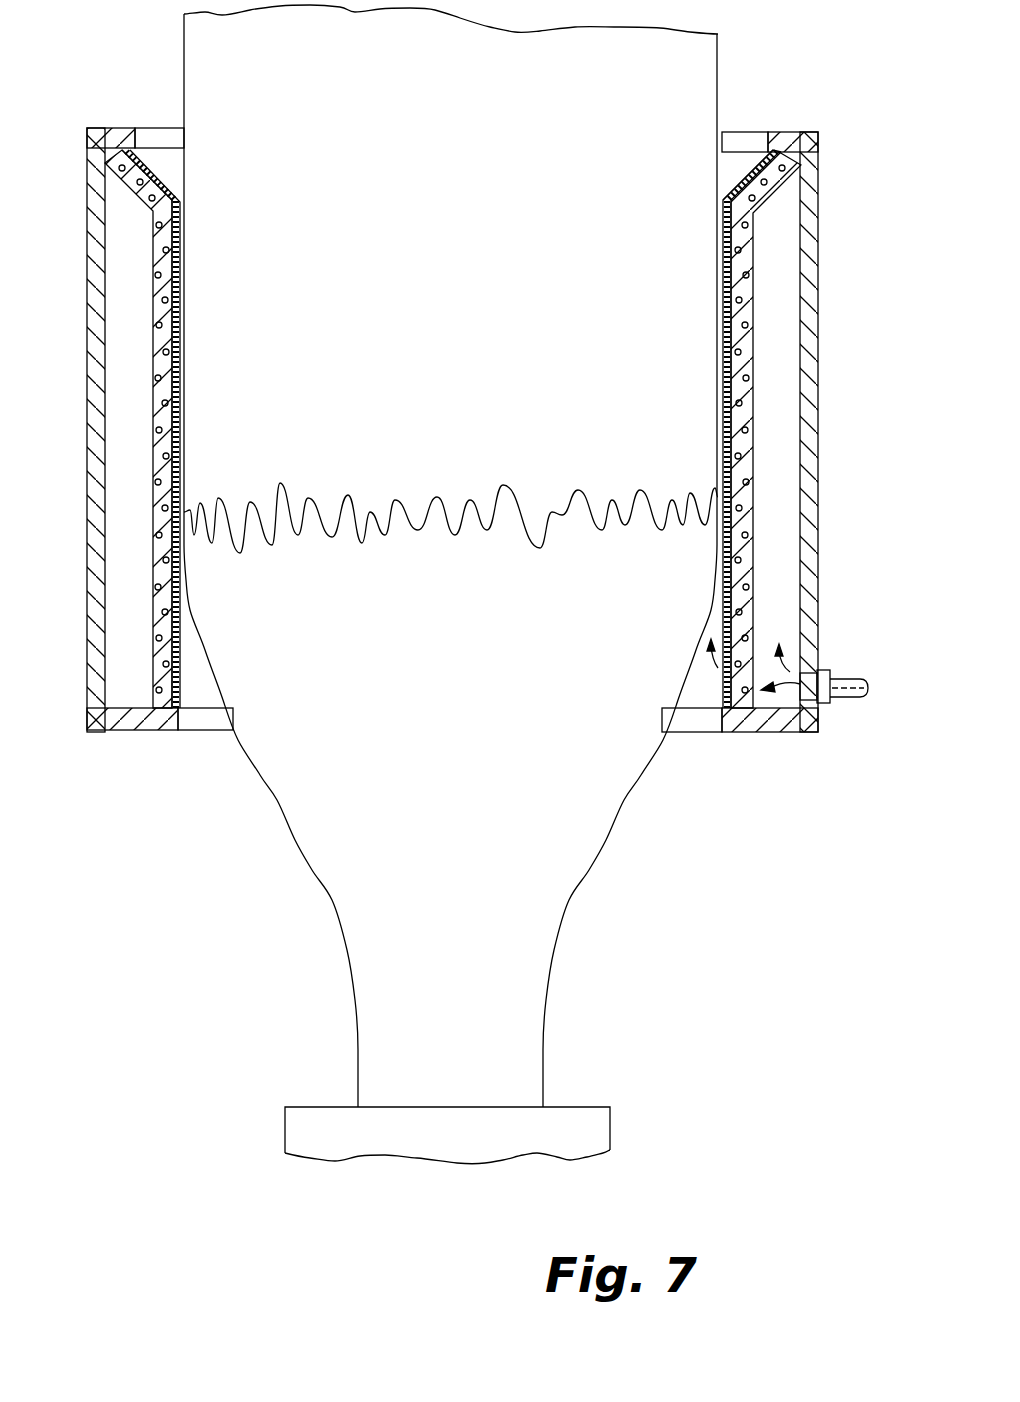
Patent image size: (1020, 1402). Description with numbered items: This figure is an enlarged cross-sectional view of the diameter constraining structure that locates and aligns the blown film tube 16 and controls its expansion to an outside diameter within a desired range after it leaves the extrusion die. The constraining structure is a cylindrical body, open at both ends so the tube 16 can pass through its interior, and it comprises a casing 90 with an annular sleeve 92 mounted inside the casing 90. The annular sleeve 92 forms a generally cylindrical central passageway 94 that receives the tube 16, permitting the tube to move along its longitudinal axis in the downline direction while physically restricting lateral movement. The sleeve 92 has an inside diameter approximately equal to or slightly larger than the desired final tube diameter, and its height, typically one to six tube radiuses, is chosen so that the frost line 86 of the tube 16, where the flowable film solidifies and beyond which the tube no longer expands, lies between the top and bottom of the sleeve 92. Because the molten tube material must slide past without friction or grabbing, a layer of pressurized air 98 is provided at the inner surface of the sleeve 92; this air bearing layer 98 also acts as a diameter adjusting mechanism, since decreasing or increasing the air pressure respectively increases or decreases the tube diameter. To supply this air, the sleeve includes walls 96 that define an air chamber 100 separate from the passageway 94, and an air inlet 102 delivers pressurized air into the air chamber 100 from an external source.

The tube 16 is at (197, 47).
The frost line 86 is at (530, 517).
The casing 90 is at (88, 372).
The annular sleeve 92 is at (172, 415).
The central passageway 94 is at (200, 690).
The walls 96 is at (160, 300).
The layer of pressurized air 98 is at (723, 197).
The air chamber 100 is at (100, 526).
The air inlet 102 is at (846, 683).